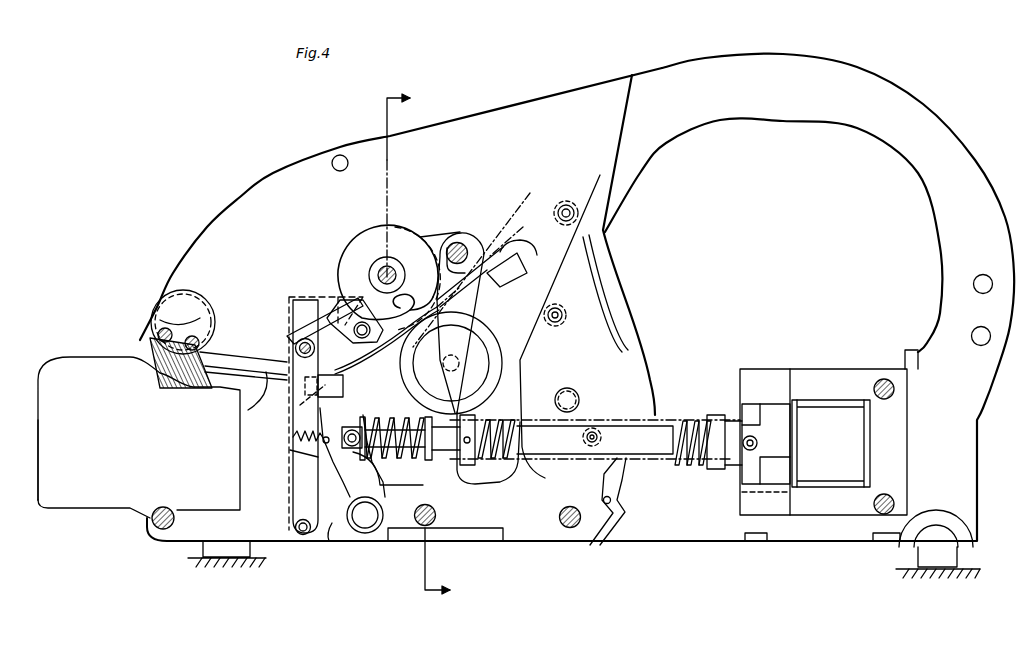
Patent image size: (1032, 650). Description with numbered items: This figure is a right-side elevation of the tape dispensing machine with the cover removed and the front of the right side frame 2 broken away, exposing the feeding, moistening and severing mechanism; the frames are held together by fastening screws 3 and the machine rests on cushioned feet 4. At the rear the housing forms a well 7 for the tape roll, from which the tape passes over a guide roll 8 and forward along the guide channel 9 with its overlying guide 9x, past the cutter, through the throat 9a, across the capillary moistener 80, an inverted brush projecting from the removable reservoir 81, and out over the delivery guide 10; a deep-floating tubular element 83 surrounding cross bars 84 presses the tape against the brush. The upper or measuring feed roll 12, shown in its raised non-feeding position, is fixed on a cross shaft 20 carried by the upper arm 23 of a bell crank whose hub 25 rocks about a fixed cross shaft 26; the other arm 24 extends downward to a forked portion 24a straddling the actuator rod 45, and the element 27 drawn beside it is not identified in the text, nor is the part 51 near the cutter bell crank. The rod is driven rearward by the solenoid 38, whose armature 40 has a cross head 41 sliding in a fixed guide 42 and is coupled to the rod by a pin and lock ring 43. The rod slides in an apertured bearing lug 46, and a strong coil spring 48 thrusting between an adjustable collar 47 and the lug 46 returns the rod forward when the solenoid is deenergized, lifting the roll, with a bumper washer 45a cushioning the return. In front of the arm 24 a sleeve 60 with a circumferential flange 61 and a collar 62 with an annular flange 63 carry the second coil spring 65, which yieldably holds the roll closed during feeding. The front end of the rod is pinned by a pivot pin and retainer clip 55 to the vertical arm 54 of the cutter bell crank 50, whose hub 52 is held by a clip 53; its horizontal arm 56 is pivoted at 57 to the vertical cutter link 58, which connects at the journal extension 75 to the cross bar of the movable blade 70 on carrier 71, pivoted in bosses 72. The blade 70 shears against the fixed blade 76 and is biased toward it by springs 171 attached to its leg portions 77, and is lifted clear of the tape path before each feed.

The right side frame 2 is at (648, 165).
The fastening screws 3 is at (148, 524).
The cushioned feet 4 is at (217, 547).
The well 7 is at (616, 88).
The guide roll 8 is at (566, 202).
The guide plate or channel 9 is at (520, 245).
The overlying guide 9x is at (477, 262).
The feed guide means or throat 9a is at (237, 393).
The delivery guide 10 is at (83, 362).
The upper or measuring feed roll 12 is at (356, 240).
The transverse cross shaft 20 is at (378, 273).
The upper arm of bell crank 23 is at (408, 250).
The other arm of bell crank 24 is at (462, 353).
The forked portion 24a is at (470, 472).
The intermediate hub 25 is at (460, 233).
The fixed horizontal cross shaft 26 is at (464, 248).
The roller 27 is at (495, 345).
The solenoid 38 is at (849, 367).
The armature 40 is at (792, 445).
The cross head 41 is at (750, 409).
The fixed guide 42 is at (765, 404).
The pin and lock ring 43 is at (745, 452).
The actuator rod 45 is at (652, 455).
The bumper washer 45a is at (733, 467).
The apertured bearing lug 46 is at (714, 416).
The collar 47 is at (480, 462).
The coil spring 48 is at (490, 420).
The cutter bell crank 50 is at (320, 493).
The base plate 51 is at (362, 538).
The intermediate hub 52 is at (383, 510).
The clip 53 is at (346, 497).
The vertical arm of cutter bell crank 54 is at (290, 450).
The pivot pin and retainer clip 55 is at (350, 430).
The horizontal arm of cutter bell crank 56 is at (330, 543).
The pivot 57 is at (301, 540).
The vertical cutter link 58 is at (300, 463).
The sleeve 60 is at (428, 462).
The circumferential flange 61 is at (442, 462).
The collar 62 is at (368, 458).
The annular flange 63 is at (370, 424).
The second coil spring 65 is at (388, 428).
The movable blade 70 is at (320, 400).
The supporting carrier 71 is at (332, 318).
The bosses 72 is at (370, 345).
The journal extension 75 is at (294, 344).
The fixed blade 76 is at (300, 396).
The leg portions 77 is at (293, 437).
The capillary moistener 80 is at (153, 348).
The removable reservoir 81 is at (107, 490).
The hollow tubular element 83 is at (210, 306).
The cross bars 84 is at (172, 319).
The springs 171 is at (331, 403).